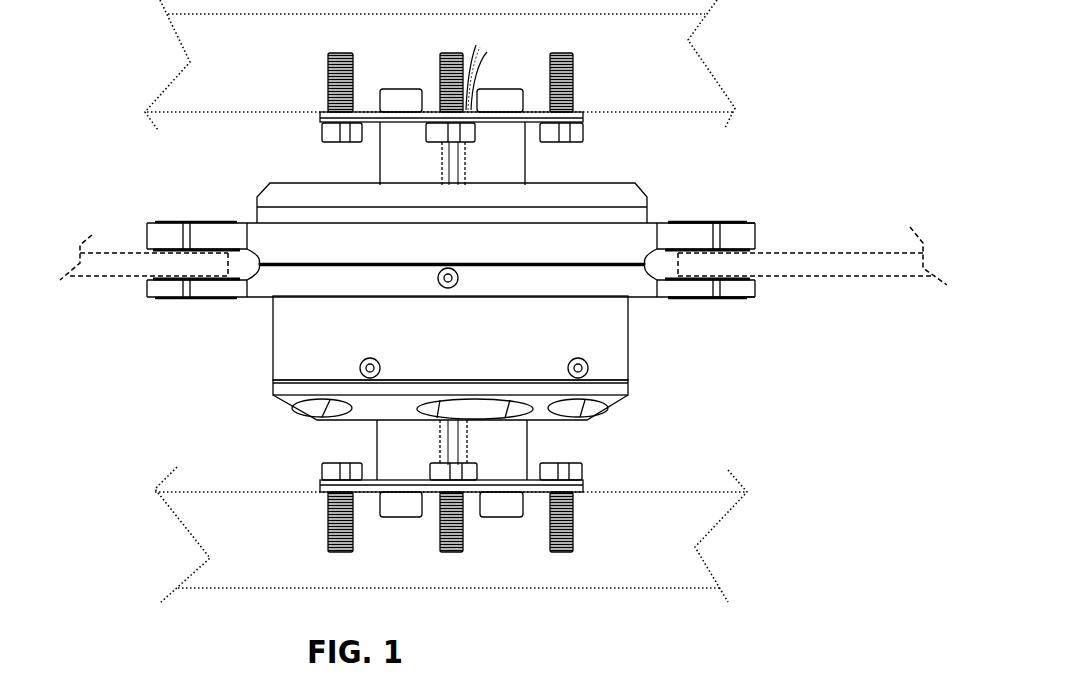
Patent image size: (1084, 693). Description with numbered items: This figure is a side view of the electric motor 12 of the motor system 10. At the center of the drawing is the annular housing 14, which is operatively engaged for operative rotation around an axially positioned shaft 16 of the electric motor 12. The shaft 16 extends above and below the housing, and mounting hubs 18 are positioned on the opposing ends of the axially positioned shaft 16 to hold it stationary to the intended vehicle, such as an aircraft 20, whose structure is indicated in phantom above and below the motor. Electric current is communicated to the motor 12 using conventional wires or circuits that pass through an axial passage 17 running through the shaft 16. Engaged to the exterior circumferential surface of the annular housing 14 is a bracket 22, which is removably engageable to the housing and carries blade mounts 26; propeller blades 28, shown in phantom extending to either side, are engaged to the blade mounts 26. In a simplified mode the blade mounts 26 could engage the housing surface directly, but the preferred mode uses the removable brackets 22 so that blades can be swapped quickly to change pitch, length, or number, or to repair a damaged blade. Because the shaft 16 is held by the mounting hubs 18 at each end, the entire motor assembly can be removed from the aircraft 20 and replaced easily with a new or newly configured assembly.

The motor system 10 is at (792, 138).
The electric motor 12 is at (648, 205).
The annular housing 14 is at (597, 343).
The axially positioned shaft 16 is at (515, 168).
The axial passage 17 is at (443, 168).
The mounting hubs 18 is at (583, 112).
The aircraft 20 is at (698, 88).
The bracket 22 is at (267, 285).
The blade mounts 26 is at (740, 223).
The propeller blades 28 is at (818, 273).